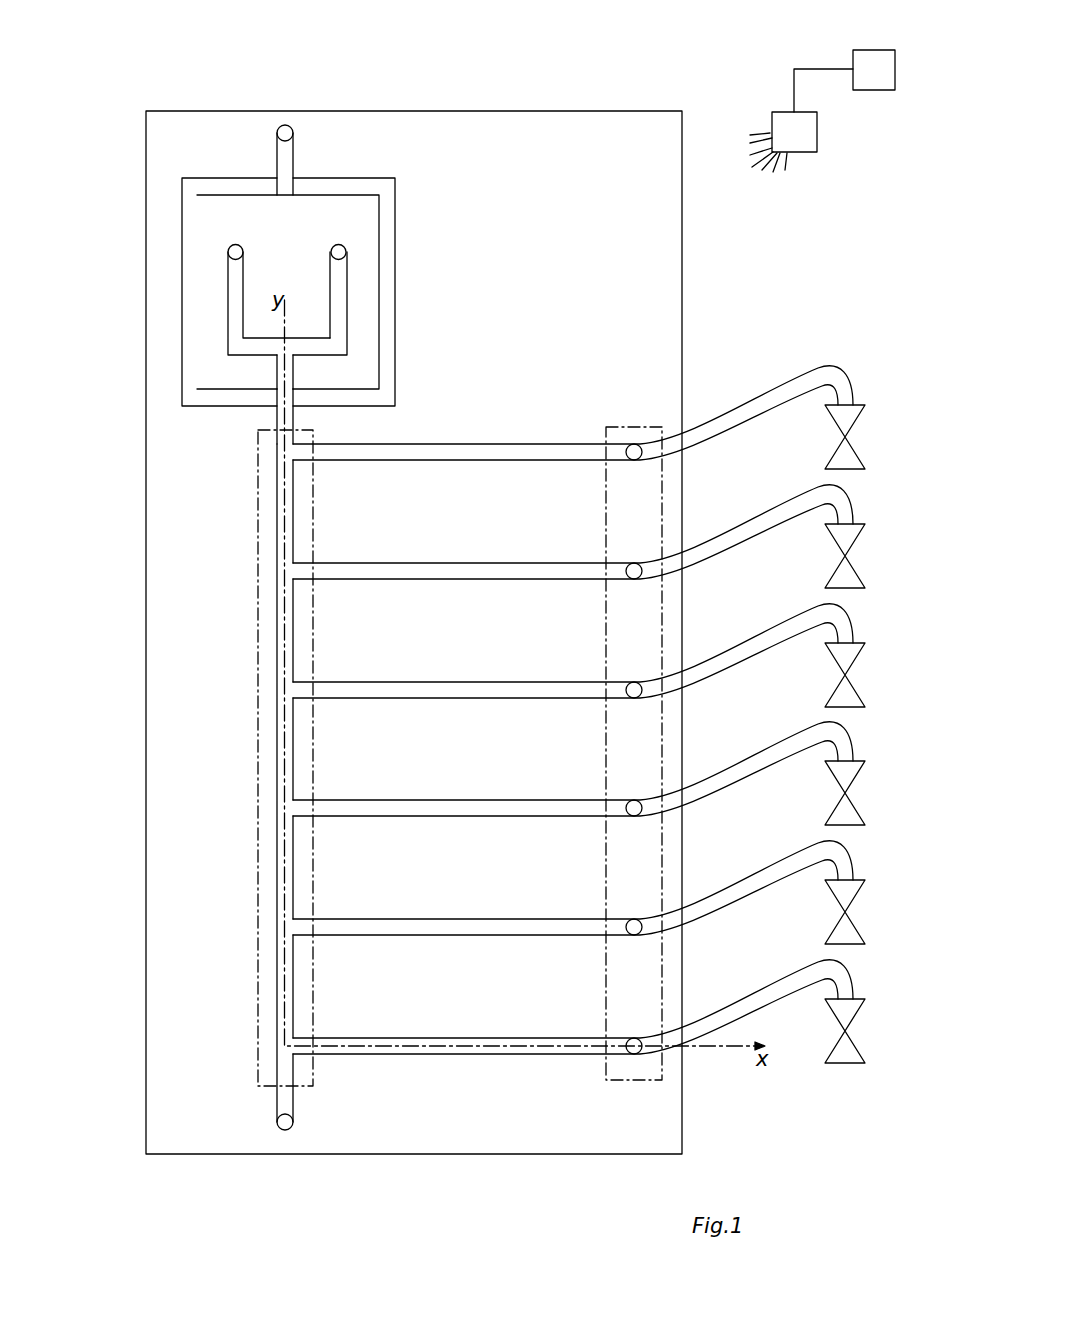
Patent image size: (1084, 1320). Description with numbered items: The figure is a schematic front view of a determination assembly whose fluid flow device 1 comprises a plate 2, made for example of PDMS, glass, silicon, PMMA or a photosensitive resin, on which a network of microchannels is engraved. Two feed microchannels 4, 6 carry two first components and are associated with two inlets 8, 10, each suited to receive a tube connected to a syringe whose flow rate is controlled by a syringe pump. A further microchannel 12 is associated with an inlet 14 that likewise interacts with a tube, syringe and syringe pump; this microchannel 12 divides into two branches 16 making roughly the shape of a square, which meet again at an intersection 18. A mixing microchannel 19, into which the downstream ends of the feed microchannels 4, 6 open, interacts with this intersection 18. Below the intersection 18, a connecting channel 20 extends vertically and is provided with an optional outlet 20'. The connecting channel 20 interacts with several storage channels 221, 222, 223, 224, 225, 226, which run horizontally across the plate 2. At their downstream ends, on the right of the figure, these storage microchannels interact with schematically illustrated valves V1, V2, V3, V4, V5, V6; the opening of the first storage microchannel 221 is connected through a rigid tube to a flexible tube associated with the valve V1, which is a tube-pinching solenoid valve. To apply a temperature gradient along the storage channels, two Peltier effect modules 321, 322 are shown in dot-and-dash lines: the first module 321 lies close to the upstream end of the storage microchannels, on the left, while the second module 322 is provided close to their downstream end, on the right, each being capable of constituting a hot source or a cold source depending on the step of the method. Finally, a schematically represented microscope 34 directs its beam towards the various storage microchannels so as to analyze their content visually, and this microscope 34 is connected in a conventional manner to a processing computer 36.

The fluid flow device 1 is at (593, 94).
The plate 2 is at (618, 213).
The feed microchannel 4 is at (237, 270).
The feed microchannel 6 is at (338, 277).
The inlet 8 is at (236, 246).
The inlet 10 is at (338, 246).
The microchannel 12 is at (287, 158).
The inlet 14 is at (286, 125).
The branches 16 is at (222, 178).
The intersection 18 is at (287, 398).
The mixing microchannel 19 is at (287, 368).
The connecting channel 20 is at (241, 783).
The outlet 20' is at (260, 1164).
The storage channel 221 is at (455, 462).
The storage channel 222 is at (455, 581).
The storage channel 223 is at (455, 700).
The storage channel 224 is at (455, 818).
The storage channel 225 is at (455, 937).
The storage channel 226 is at (455, 1056).
The Peltier effect module 321 is at (258, 991).
The Peltier effect module 322 is at (632, 427).
The microscope 34 is at (801, 120).
The processing computer 36 is at (874, 70).
The valve V1 is at (847, 437).
The valve V2 is at (847, 556).
The valve V3 is at (847, 675).
The valve V4 is at (847, 793).
The valve V5 is at (847, 912).
The valve V6 is at (847, 1031).